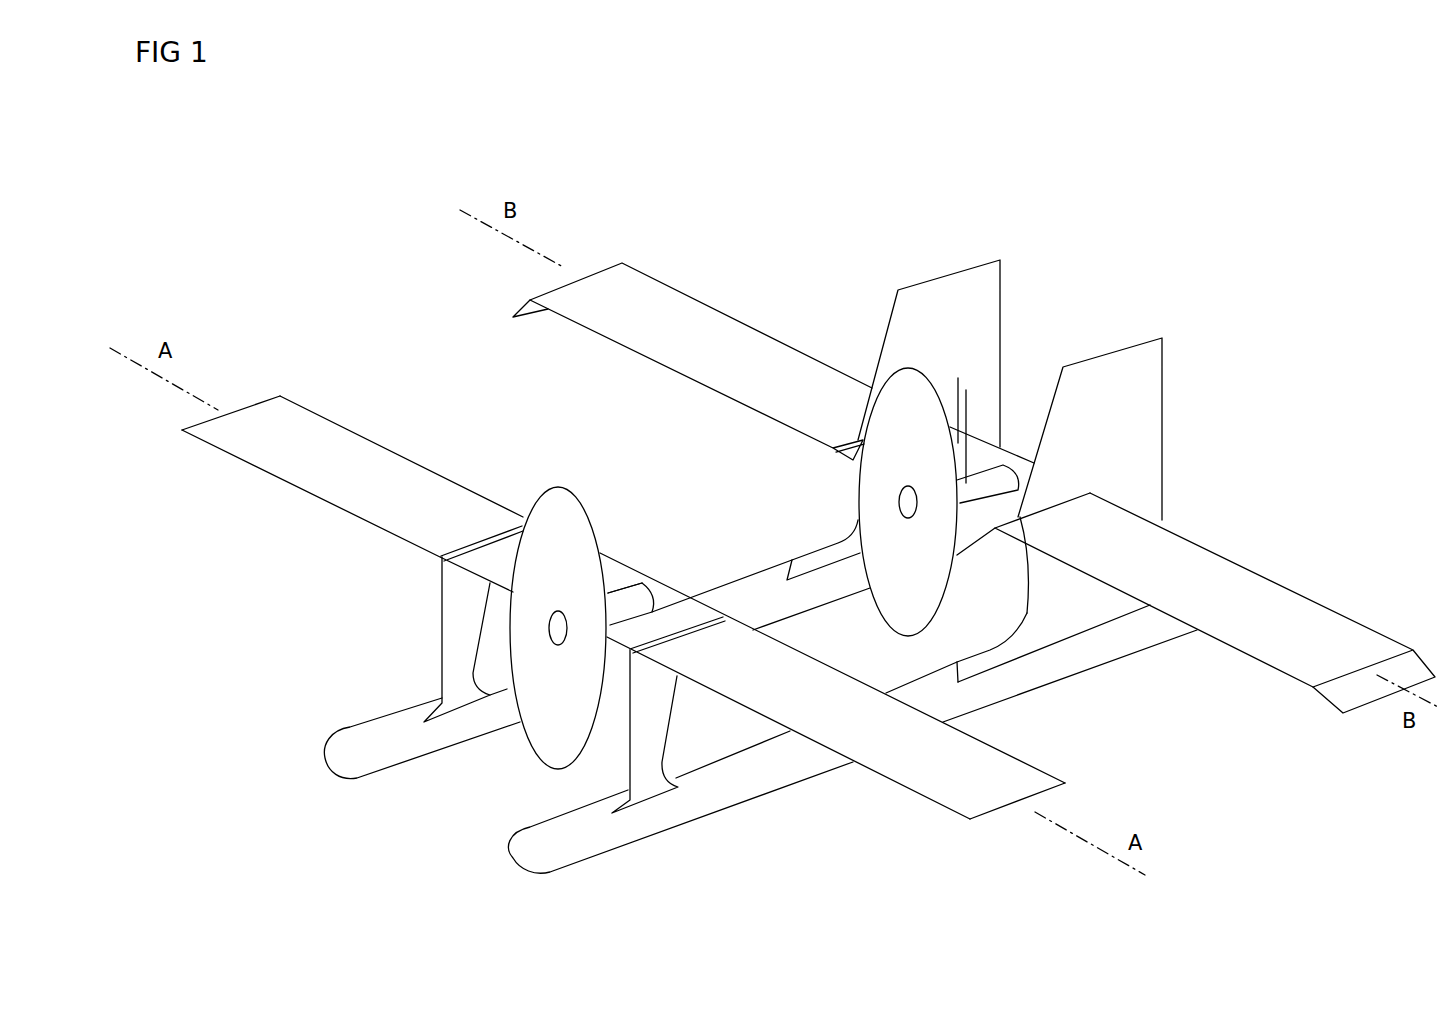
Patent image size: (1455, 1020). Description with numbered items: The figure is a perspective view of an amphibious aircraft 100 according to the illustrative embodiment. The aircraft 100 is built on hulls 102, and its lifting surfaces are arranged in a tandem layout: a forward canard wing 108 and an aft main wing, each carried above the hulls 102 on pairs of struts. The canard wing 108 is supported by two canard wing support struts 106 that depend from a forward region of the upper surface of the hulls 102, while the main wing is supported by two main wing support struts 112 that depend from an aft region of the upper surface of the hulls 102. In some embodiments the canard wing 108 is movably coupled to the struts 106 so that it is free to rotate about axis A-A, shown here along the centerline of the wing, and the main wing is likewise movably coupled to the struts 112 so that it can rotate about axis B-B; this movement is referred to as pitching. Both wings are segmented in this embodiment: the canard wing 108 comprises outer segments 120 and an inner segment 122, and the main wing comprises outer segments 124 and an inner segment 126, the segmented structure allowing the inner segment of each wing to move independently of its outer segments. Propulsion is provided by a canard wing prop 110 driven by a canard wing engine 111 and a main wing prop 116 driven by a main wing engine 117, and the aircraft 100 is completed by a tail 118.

The amphibious aircraft 100 is at (768, 238).
The hulls 102 is at (345, 760).
The canard wing support struts 106 is at (460, 620).
The canard wing 108 is at (260, 392).
The canard wing prop 110 is at (547, 485).
The canard wing engine 111 is at (624, 602).
The main wing support struts 112 is at (822, 548).
The main wing prop 116 is at (927, 375).
The main wing engine 117 is at (966, 425).
The tail 118 is at (967, 262).
The outer segments 120 is at (352, 476).
The inner segment 122 is at (617, 560).
The outer segments 124 is at (702, 351).
The inner segment 126 is at (958, 380).